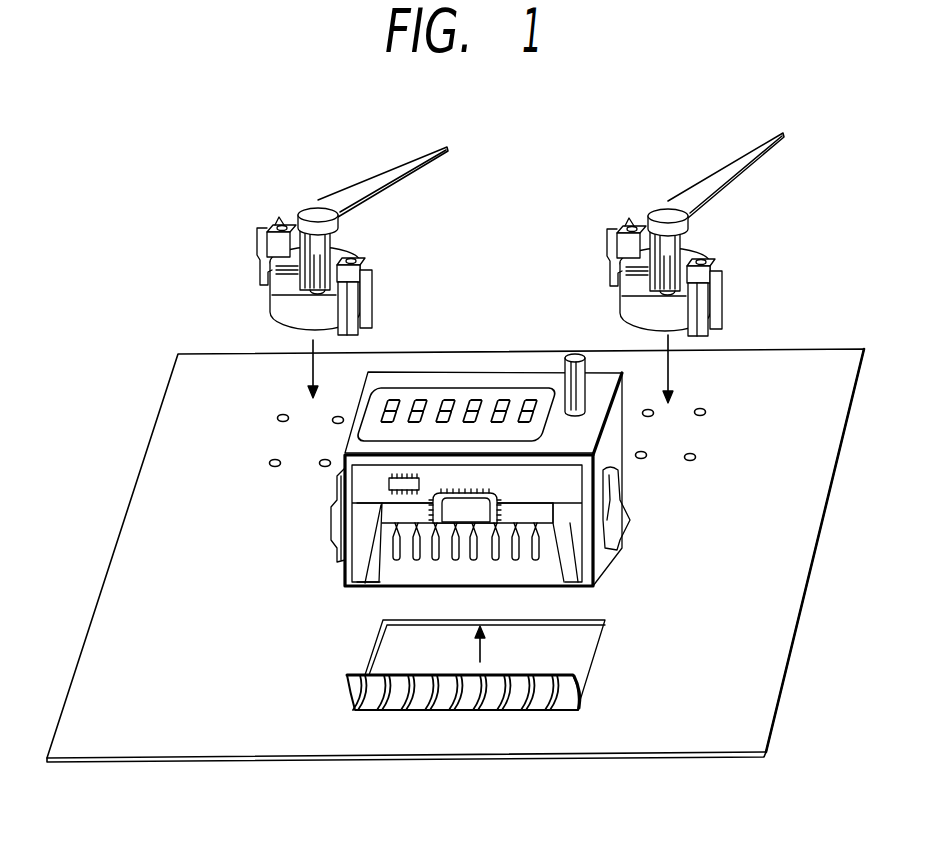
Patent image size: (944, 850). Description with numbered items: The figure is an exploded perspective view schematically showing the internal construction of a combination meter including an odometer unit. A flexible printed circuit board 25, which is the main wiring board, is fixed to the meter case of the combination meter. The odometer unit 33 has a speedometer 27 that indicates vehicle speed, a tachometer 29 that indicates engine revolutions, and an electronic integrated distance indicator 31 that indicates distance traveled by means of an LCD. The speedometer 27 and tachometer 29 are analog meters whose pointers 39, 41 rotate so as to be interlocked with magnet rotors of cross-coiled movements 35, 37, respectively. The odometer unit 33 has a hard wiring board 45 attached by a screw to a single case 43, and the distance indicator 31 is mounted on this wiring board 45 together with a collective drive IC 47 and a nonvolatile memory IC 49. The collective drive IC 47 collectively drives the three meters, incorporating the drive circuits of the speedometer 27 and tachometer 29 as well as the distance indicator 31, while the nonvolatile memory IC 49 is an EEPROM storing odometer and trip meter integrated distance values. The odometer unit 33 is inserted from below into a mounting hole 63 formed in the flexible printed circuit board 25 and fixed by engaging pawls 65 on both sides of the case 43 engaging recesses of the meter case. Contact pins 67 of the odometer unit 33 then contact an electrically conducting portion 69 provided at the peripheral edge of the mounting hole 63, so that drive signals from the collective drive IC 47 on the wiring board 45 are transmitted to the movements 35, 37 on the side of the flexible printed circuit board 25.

The flexible printed circuit board 25 is at (795, 352).
The speedometer 27 is at (323, 214).
The tachometer 29 is at (667, 220).
The electronic integrated distance indicator 31 is at (436, 388).
The odometer unit 33 is at (483, 358).
The cross-coiled movement 35 is at (269, 307).
The cross-coiled movement 37 is at (619, 299).
The pointer 39 is at (400, 172).
The pointer 41 is at (733, 171).
The case 43 is at (476, 436).
The hard wiring board 45 is at (538, 500).
The collective drive IC 47 is at (468, 512).
The nonvolatile memory IC 49 is at (389, 484).
The mounting hole 63 is at (590, 643).
The engaging pawls 65 is at (340, 545).
The contact pins 67 is at (432, 553).
The electrically conducting portion 69 is at (400, 690).